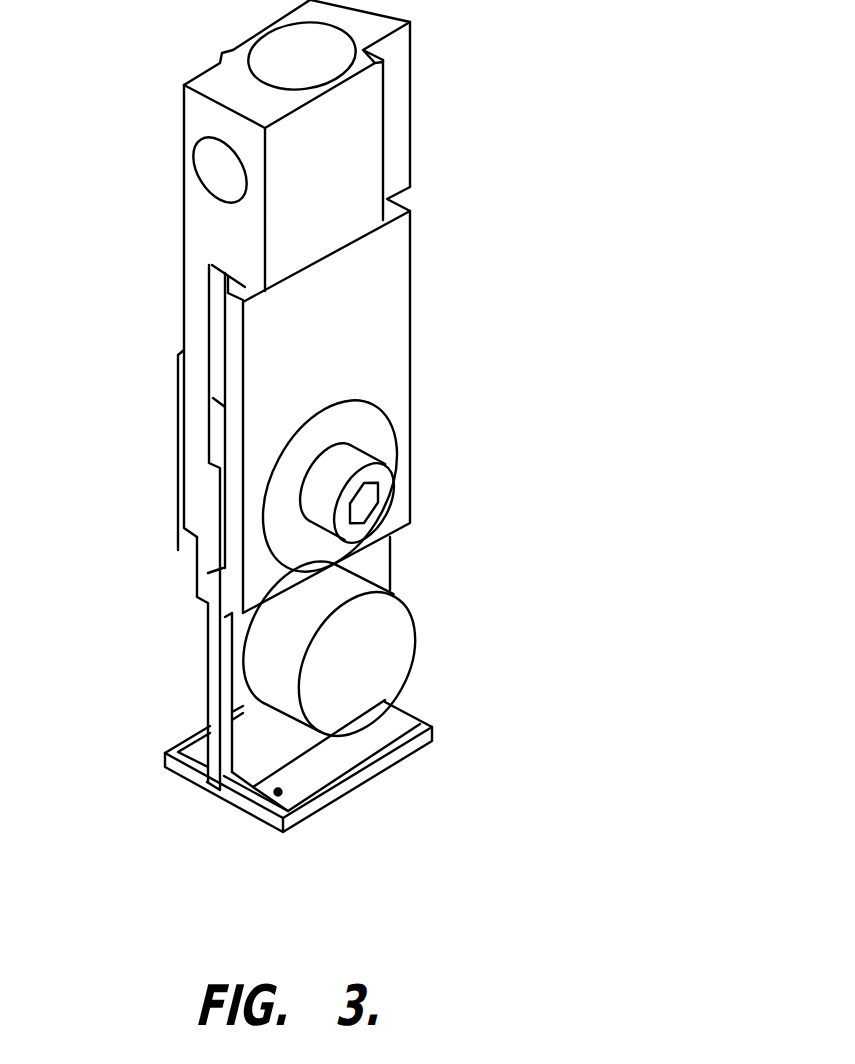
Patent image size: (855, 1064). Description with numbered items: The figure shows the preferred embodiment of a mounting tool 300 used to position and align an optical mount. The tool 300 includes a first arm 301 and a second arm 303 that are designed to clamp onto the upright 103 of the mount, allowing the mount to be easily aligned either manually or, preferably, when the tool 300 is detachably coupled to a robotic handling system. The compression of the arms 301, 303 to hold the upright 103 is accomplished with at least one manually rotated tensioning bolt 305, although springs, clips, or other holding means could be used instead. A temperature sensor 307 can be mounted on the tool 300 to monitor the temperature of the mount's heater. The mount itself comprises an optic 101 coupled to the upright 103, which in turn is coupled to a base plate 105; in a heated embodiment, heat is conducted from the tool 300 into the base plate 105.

The mounting tool 300 is at (399, 416).
The first arm 301 is at (385, 327).
The tensioning bolt 305 is at (388, 485).
The optic 101 is at (375, 656).
The base plate 105 is at (430, 745).
The upright 103 is at (215, 680).
The second arm 303 is at (197, 508).
The temperature sensor 307 is at (187, 553).